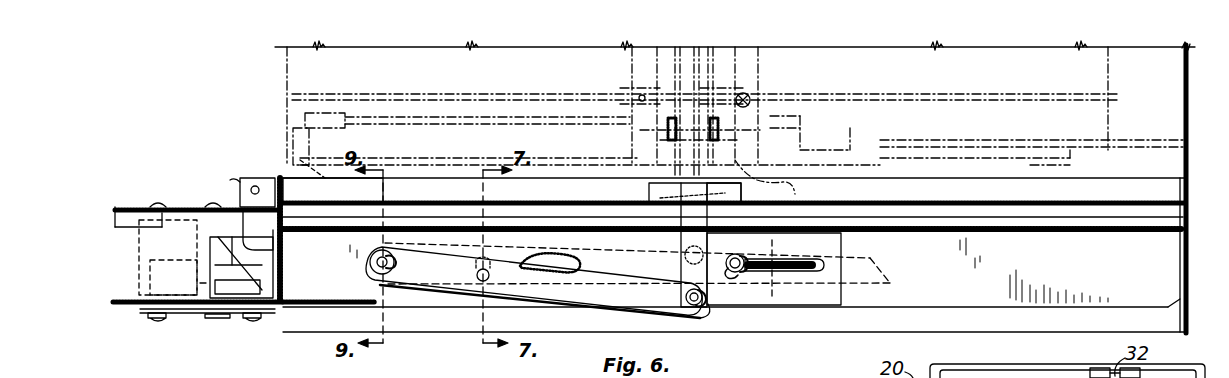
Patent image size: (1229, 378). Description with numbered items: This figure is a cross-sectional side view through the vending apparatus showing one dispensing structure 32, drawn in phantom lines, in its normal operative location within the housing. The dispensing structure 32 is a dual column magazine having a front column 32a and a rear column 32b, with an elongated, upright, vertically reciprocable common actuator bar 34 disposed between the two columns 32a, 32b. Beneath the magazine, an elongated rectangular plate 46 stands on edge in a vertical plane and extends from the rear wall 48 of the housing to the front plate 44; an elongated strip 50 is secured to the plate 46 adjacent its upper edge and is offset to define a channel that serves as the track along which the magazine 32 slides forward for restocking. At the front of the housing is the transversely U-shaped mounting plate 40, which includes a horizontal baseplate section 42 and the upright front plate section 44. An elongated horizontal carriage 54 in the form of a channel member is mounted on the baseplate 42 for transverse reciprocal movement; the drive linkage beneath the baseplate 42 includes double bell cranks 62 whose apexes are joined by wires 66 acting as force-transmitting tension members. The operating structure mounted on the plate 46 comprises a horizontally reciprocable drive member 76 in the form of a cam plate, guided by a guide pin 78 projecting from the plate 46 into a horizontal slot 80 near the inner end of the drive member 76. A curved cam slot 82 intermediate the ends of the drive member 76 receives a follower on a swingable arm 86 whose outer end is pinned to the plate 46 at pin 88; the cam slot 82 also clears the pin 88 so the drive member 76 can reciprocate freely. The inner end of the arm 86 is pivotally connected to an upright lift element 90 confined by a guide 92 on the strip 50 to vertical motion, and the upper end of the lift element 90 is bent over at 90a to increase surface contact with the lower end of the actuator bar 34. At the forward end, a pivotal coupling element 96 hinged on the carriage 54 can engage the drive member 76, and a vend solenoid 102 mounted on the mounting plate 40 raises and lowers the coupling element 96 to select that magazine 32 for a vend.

The dispensing structure 32 is at (284, 74).
The front column 32a is at (417, 50).
The rear column 32b is at (1008, 54).
The common actuator bar 34 is at (791, 176).
The mounting plate 40 is at (128, 207).
The baseplate section 42 is at (126, 304).
The front plate section 44 is at (284, 255).
The plate 46 is at (908, 302).
The rear wall 48 is at (1188, 87).
The strip 50 is at (564, 178).
The carriage 54 is at (138, 278).
The double bell crank 62 is at (182, 313).
The wire 66 is at (155, 321).
The drive member 76 is at (321, 308).
The guide pin 78 is at (732, 272).
The horizontal slot 80 is at (785, 274).
The cam slot 82 is at (582, 273).
The swingable arm 86 is at (525, 298).
The pin 88 is at (395, 264).
The lift element 90 is at (682, 244).
The bent-over upper end 90a is at (654, 180).
The guide 92 is at (707, 193).
The coupling element 96 is at (212, 238).
The vend solenoid 102 is at (285, 210).